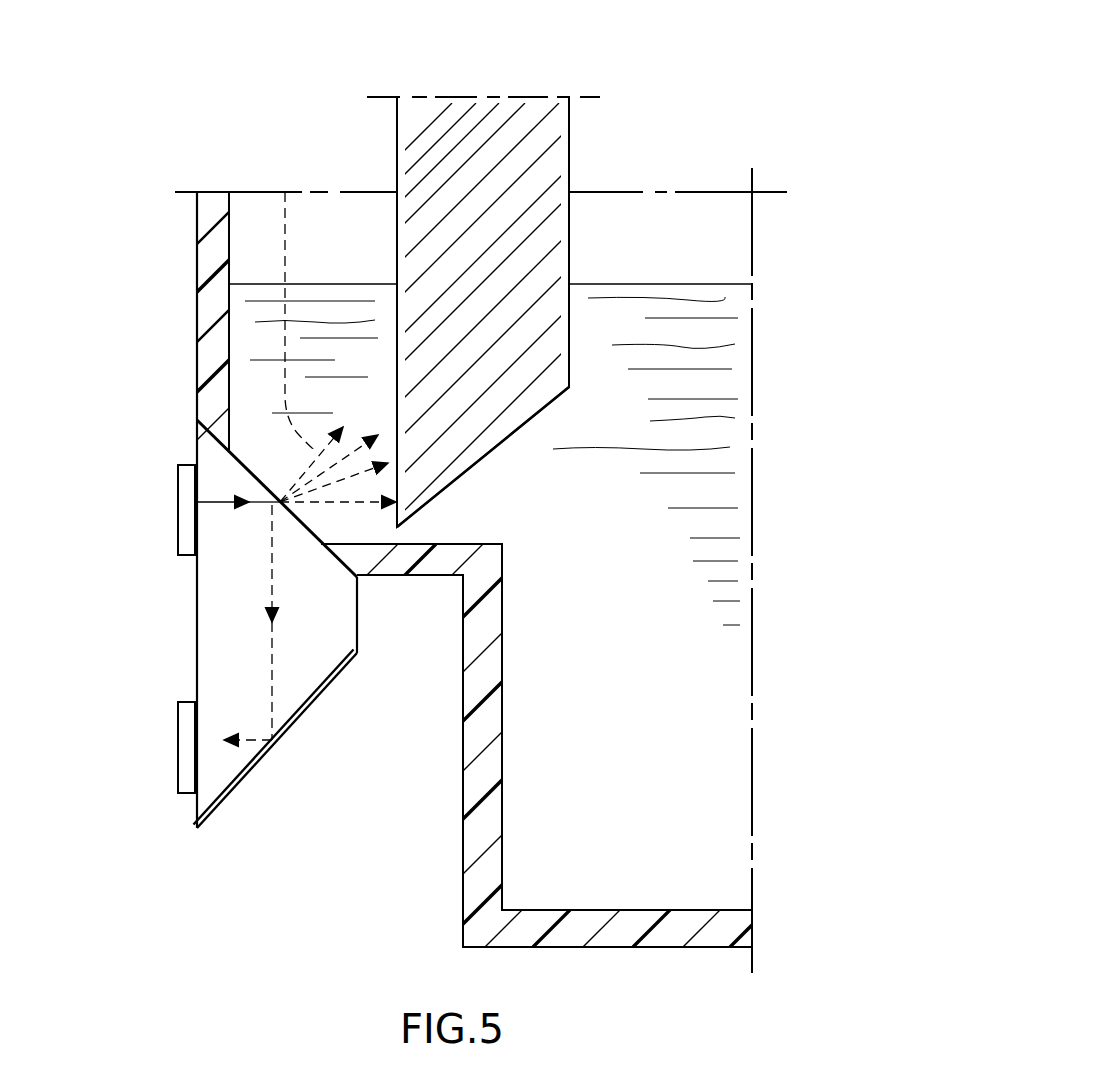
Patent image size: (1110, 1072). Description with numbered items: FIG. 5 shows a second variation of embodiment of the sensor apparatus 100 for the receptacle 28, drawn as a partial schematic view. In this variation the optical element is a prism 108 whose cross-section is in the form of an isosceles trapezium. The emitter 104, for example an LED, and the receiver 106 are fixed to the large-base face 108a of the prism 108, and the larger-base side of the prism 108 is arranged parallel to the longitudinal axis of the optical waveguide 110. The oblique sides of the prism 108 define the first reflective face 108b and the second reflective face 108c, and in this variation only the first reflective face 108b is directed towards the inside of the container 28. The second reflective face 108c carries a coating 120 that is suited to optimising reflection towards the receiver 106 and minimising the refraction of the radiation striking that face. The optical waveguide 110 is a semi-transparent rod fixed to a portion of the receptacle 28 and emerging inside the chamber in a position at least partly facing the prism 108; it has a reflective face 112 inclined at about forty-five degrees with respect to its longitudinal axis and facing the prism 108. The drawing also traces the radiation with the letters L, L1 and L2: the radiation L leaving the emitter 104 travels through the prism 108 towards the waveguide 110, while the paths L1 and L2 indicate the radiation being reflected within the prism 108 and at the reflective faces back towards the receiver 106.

The receptacle 28 is at (550, 947).
The sensor apparatus 100 is at (217, 833).
The emitter 104 is at (177, 507).
The receiver 106 is at (178, 756).
The prism 108 is at (226, 616).
The large-base face 108a is at (193, 685).
The first reflective face 108b is at (252, 467).
The second reflective face 108c is at (240, 780).
The optical waveguide 110 is at (576, 141).
The reflective face 112 is at (493, 453).
The coating 120 is at (270, 747).
The light L is at (215, 502).
The first light path L1 is at (272, 643).
The second light path L2 is at (285, 192).